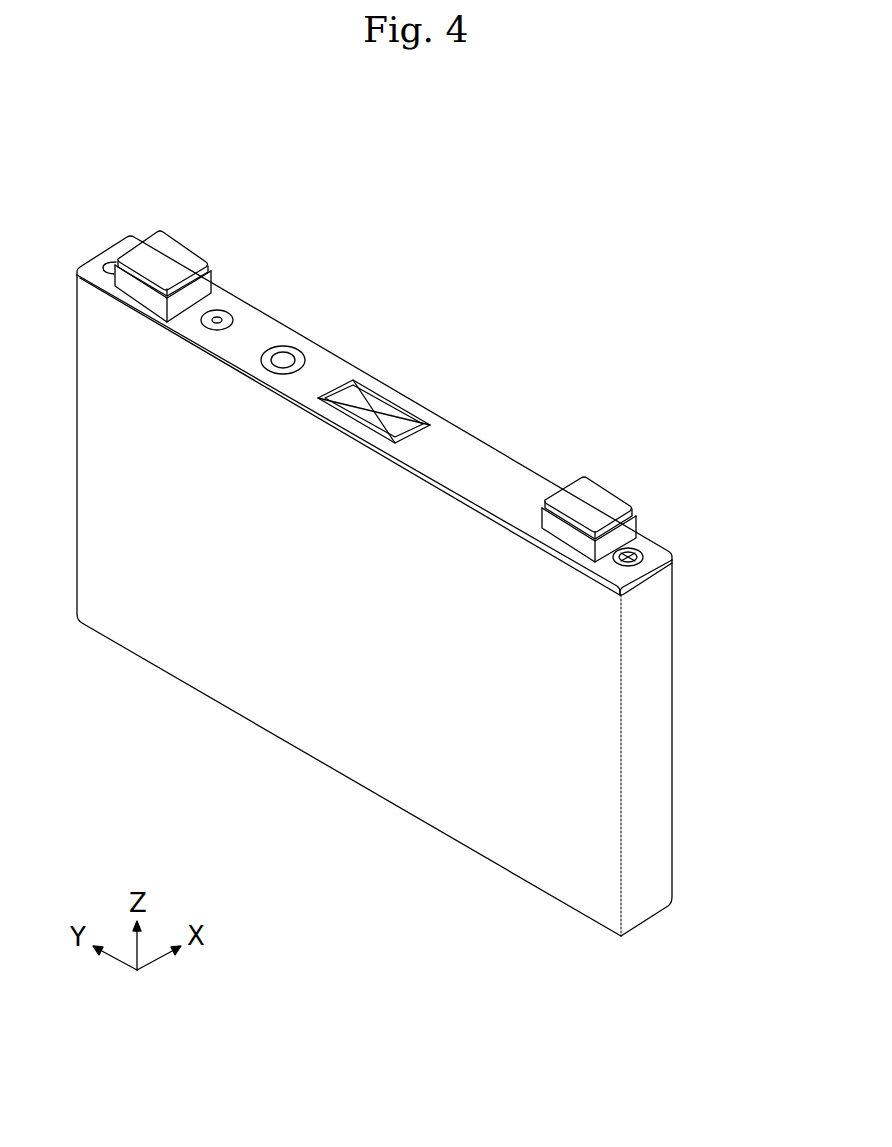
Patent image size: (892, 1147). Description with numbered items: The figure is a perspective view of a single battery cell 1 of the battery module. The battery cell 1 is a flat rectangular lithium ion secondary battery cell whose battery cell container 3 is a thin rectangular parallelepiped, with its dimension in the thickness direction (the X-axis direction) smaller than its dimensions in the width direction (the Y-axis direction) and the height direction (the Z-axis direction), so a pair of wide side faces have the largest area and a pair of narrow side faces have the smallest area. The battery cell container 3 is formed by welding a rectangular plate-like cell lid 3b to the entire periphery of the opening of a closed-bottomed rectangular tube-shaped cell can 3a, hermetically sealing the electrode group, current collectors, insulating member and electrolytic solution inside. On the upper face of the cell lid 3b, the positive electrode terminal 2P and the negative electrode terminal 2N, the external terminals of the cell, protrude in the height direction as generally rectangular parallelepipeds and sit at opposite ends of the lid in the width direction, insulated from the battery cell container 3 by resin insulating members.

The battery cell 1 is at (593, 189).
The negative electrode terminal 2N is at (162, 255).
The positive electrode terminal 2P is at (588, 498).
The battery cell container 3 is at (775, 515).
The cell can 3a is at (660, 634).
The cell lid 3b is at (662, 549).